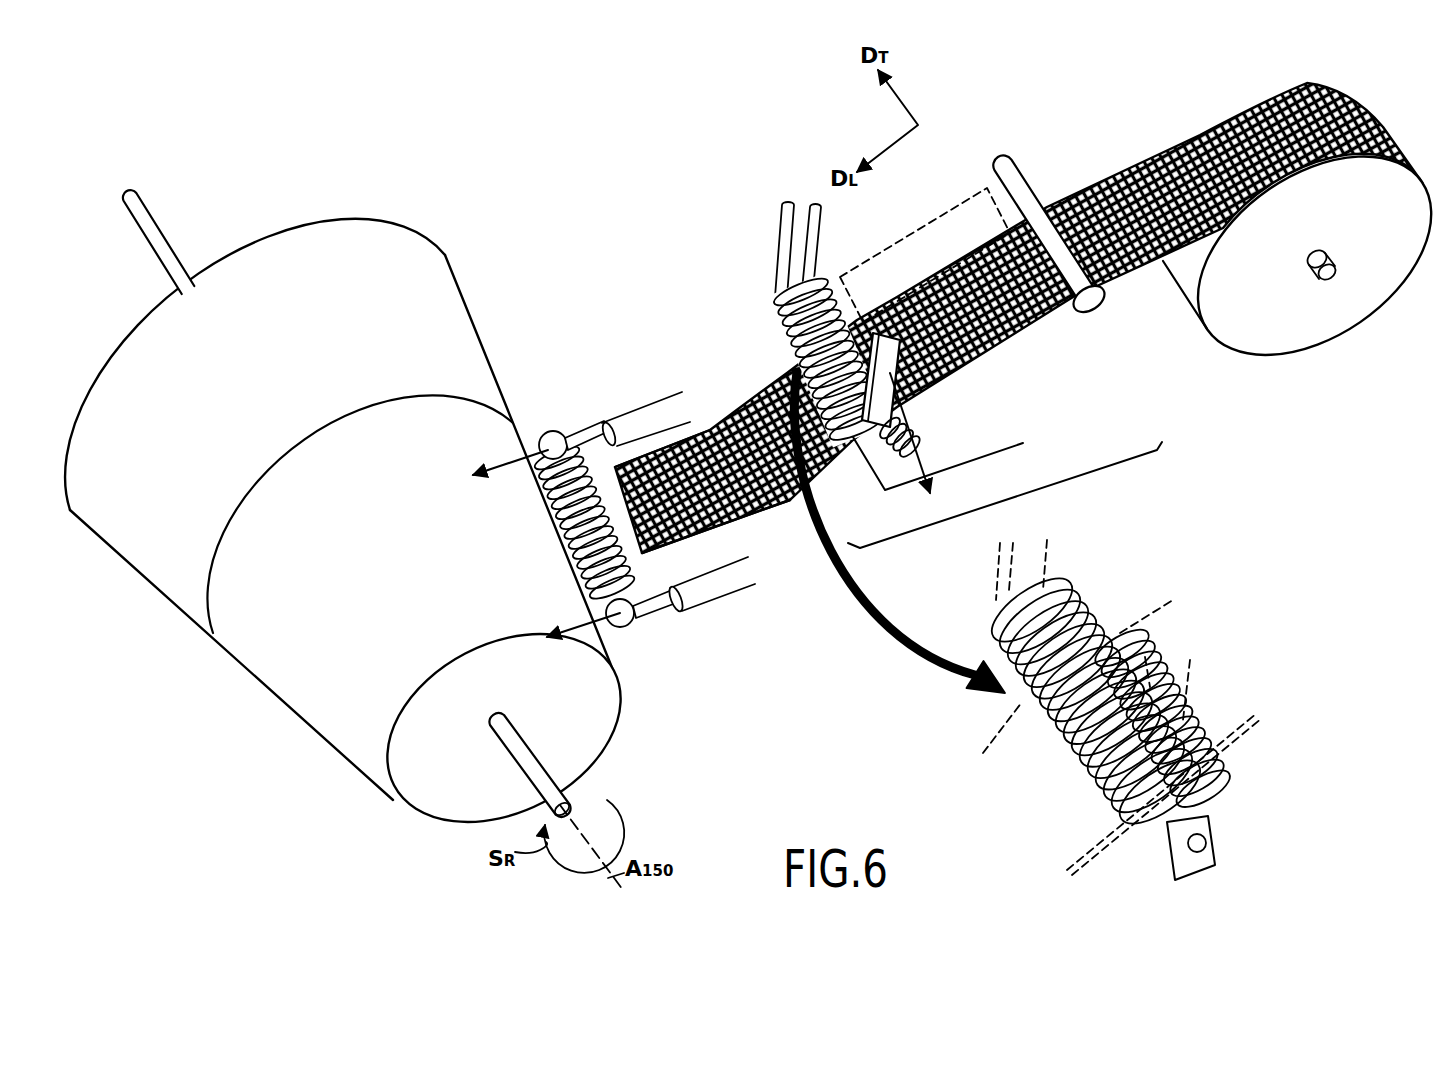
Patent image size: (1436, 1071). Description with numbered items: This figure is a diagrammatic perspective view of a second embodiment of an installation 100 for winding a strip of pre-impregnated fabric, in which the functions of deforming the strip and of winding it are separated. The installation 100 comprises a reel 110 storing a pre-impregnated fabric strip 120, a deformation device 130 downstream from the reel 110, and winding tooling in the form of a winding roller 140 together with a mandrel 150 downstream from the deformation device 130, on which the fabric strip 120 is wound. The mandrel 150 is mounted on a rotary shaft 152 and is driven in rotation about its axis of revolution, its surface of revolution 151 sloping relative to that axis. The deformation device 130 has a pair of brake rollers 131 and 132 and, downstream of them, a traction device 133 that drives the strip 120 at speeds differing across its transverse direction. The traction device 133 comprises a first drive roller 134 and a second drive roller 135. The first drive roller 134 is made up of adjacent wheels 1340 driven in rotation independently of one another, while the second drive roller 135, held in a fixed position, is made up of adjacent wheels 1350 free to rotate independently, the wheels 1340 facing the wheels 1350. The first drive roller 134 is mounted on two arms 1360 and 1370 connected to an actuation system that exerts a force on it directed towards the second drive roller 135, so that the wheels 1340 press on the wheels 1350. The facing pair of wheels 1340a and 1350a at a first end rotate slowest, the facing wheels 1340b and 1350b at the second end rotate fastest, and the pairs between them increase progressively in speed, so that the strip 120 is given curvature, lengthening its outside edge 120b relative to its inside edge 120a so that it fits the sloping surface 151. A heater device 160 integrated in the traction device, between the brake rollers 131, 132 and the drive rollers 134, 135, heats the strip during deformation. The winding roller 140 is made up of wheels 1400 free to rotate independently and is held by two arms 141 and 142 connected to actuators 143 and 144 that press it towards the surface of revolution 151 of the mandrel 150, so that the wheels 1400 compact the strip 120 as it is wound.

The installation 100 is at (672, 113).
The reel 110 is at (1366, 310).
The pre-impregnated fabric strip 120 is at (1101, 166).
The inside edge 120a is at (740, 517).
The outside edge 120b is at (707, 428).
The deformation device 130 is at (982, 545).
The brake roller 131 is at (1077, 310).
The brake roller 132 is at (1100, 315).
The traction device 133 is at (745, 303).
The first drive roller 134 is at (855, 441).
The second drive roller 135 is at (932, 432).
The winding roller 140 is at (615, 515).
The arm 141 is at (640, 613).
The arm 142 is at (578, 431).
The actuator 143 is at (733, 589).
The actuator 144 is at (620, 422).
The mandrel 150 is at (206, 654).
The surface of revolution 151 is at (330, 725).
The rotary shaft 152 is at (534, 762).
The heater device 160 is at (903, 237).
The wheels 1340 is at (1078, 737).
The wheel 1340a is at (1110, 795).
The wheel 1340b is at (1000, 615).
The wheels 1350 is at (1140, 655).
The wheel 1350a is at (1205, 790).
The wheel 1350b is at (1073, 633).
The arm 1360 is at (893, 380).
The arm 1370 is at (787, 234).
The wheels 1400 is at (553, 572).